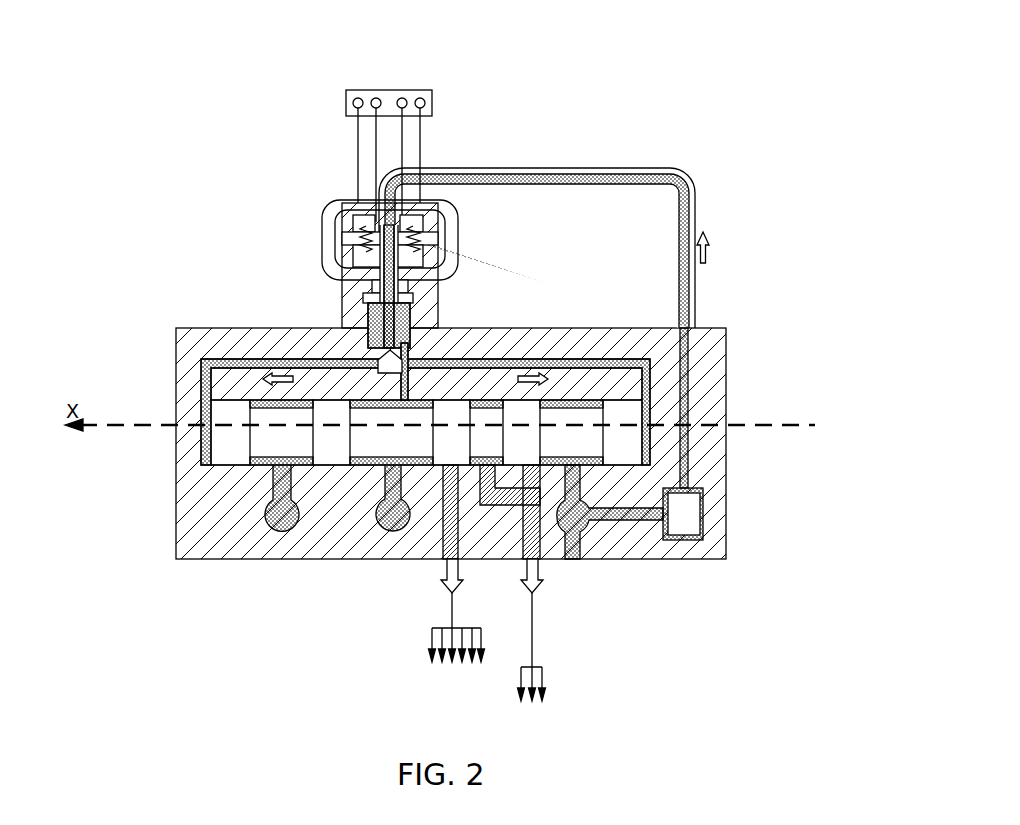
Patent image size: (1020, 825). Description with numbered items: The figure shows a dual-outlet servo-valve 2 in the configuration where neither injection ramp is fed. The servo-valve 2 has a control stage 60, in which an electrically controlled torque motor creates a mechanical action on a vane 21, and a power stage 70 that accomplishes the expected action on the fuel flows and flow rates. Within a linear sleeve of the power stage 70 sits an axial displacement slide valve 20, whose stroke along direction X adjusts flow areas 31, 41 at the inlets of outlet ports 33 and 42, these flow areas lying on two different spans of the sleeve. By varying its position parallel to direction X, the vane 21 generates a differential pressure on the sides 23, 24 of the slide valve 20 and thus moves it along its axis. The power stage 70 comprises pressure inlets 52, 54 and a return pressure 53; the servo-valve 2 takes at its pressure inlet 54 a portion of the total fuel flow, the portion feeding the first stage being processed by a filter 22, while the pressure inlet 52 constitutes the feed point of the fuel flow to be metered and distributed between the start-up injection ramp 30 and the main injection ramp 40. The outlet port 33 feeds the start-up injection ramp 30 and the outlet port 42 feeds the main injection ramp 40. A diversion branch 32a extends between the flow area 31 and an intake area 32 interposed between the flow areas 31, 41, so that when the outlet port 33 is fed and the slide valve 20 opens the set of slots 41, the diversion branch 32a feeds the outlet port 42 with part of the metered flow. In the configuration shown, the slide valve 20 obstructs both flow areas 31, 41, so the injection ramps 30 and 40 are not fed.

The servo-valve 2 is at (650, 112).
The slide valve 20 is at (584, 443).
The vane 21 is at (383, 358).
The filter 22 is at (704, 527).
The side of the slide valve 23 is at (199, 424).
The side of the slide valve 24 is at (689, 431).
The start-up injection ramp 30 is at (532, 641).
The flow area 31 is at (573, 470).
The intake area 32 is at (488, 455).
The diversion branch 32a is at (488, 492).
The outlet port 33 is at (536, 561).
The main injection ramp 40 is at (457, 622).
The flow area 41 is at (452, 470).
The outlet port 42 is at (445, 561).
The pressure inlet 52 is at (280, 533).
The return pressure 53 is at (390, 533).
The pressure inlet 54 is at (580, 460).
The control stage 60 is at (125, 79).
The power stage 70 is at (123, 388).